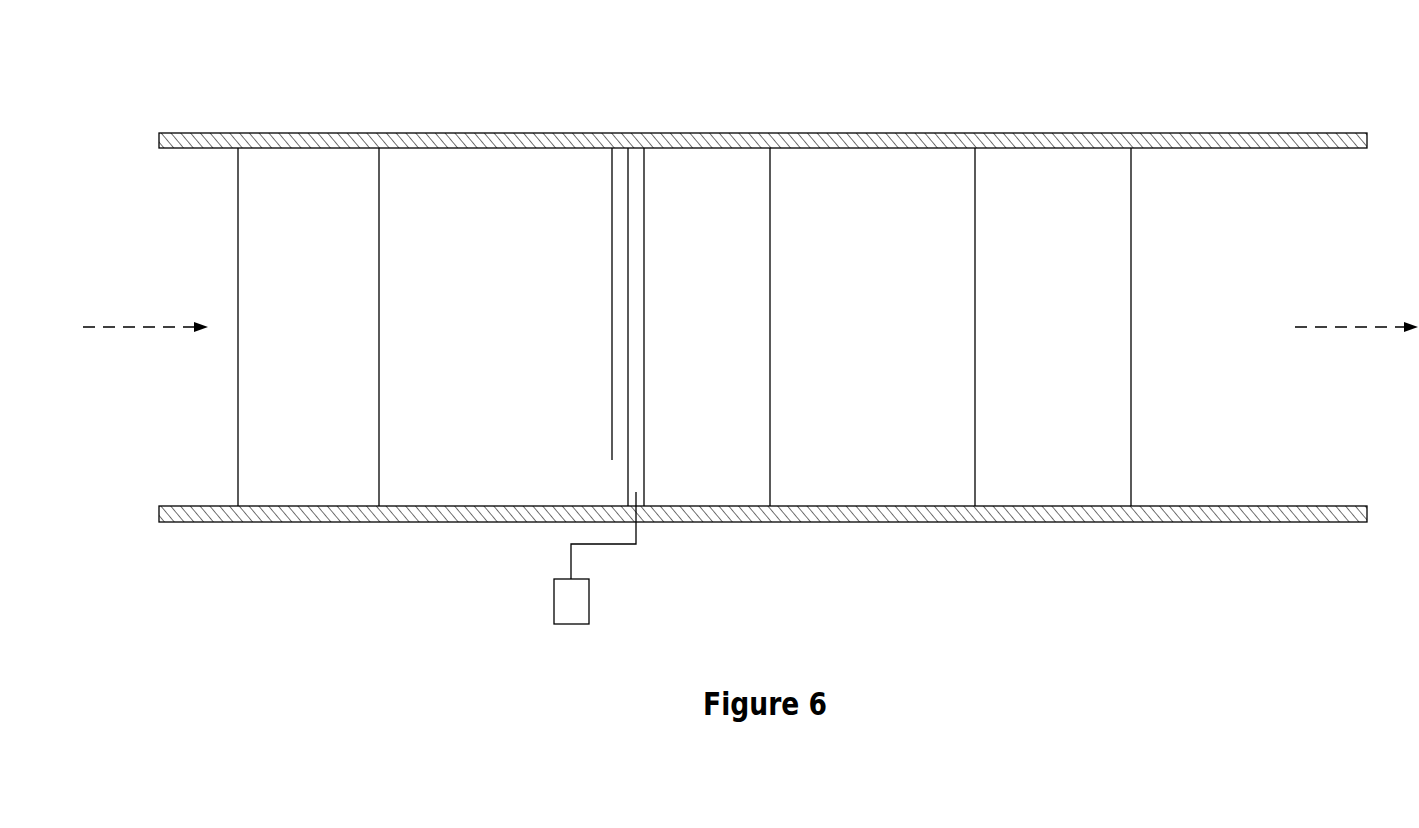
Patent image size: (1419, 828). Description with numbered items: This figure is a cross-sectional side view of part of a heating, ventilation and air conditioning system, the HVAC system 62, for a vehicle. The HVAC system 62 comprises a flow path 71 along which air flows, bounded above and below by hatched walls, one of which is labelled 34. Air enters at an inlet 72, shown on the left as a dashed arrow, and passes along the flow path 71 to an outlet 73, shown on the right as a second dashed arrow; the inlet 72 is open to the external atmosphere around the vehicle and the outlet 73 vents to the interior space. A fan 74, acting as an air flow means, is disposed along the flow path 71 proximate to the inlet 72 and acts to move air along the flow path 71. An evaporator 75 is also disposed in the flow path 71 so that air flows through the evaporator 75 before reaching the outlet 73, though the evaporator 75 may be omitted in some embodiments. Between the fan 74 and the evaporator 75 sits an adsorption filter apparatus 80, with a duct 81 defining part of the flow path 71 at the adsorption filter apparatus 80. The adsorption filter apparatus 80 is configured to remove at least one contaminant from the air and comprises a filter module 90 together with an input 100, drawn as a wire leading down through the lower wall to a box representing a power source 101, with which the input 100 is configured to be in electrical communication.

The HVAC system 62 is at (1096, 58).
The flow path 71 is at (502, 162).
The housing bottom wall 34 is at (1246, 488).
The fan 74 is at (303, 487).
The evaporator 75 is at (645, 342).
The adsorption filter apparatus 80 is at (843, 301).
The duct 81 is at (635, 142).
The filter module 90 is at (723, 488).
The input 100 is at (640, 503).
The power source 101 is at (557, 612).
The inlet 72 is at (133, 327).
The outlet 73 is at (1347, 327).